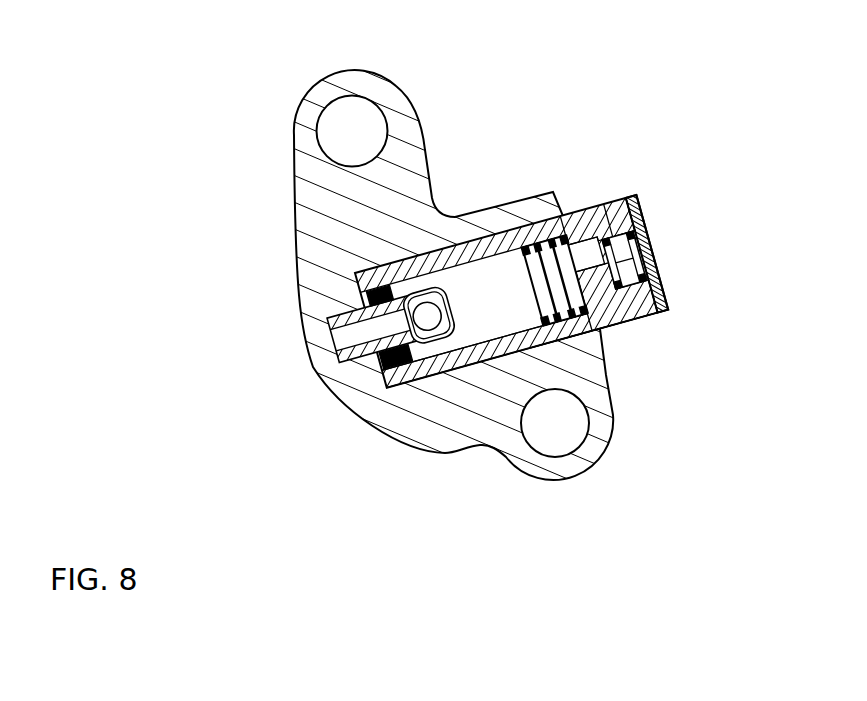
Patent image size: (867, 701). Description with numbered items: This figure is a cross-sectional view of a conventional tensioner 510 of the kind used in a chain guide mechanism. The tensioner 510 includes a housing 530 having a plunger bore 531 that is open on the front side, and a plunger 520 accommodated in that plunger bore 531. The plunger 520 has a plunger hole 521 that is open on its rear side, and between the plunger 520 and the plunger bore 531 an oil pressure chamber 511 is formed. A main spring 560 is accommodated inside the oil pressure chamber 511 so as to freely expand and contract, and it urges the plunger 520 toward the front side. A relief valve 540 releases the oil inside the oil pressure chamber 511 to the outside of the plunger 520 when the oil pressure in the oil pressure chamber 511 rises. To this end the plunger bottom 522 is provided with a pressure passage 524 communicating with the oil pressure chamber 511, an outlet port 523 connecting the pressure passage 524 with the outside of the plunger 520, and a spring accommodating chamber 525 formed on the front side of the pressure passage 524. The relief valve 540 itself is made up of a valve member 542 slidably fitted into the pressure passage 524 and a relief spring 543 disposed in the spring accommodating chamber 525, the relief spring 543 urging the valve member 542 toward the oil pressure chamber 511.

The tensioner 510 is at (203, 93).
The oil pressure chamber 511 is at (468, 332).
The plunger 520 is at (598, 205).
The plunger hole 521 is at (492, 332).
The plunger bottom 522 is at (601, 331).
The outlet port 523 is at (572, 217).
The pressure passage 524 is at (543, 216).
The spring accommodating chamber 525 is at (633, 253).
The housing 530 is at (330, 205).
The plunger bore 531 is at (372, 295).
The relief valve 540 is at (666, 281).
The valve member 542 is at (649, 316).
The relief spring 543 is at (623, 203).
The main spring 560 is at (398, 375).